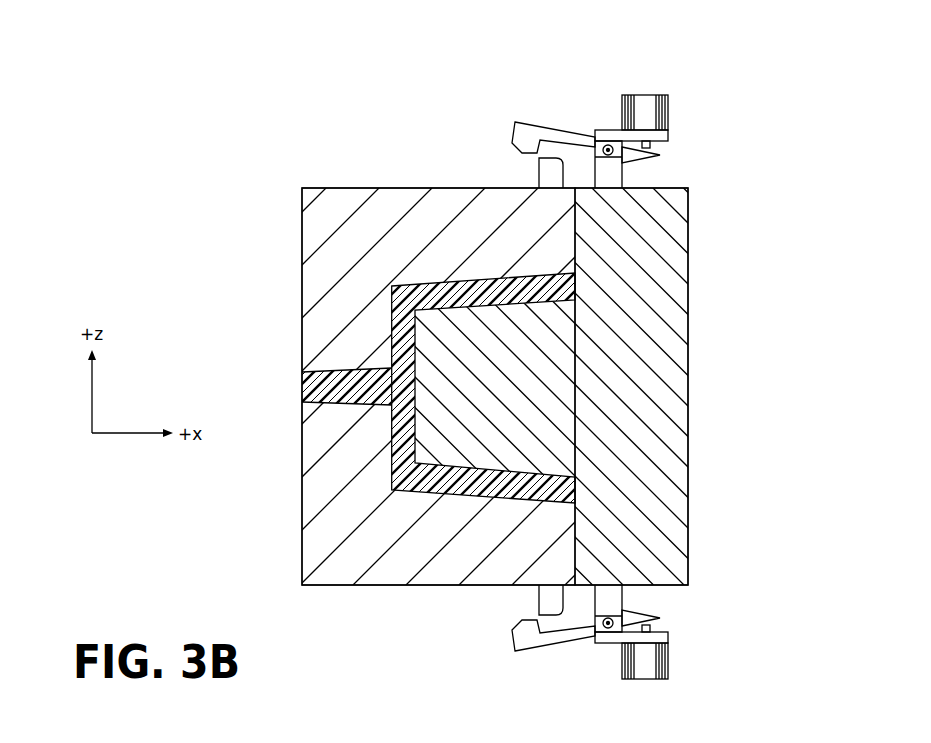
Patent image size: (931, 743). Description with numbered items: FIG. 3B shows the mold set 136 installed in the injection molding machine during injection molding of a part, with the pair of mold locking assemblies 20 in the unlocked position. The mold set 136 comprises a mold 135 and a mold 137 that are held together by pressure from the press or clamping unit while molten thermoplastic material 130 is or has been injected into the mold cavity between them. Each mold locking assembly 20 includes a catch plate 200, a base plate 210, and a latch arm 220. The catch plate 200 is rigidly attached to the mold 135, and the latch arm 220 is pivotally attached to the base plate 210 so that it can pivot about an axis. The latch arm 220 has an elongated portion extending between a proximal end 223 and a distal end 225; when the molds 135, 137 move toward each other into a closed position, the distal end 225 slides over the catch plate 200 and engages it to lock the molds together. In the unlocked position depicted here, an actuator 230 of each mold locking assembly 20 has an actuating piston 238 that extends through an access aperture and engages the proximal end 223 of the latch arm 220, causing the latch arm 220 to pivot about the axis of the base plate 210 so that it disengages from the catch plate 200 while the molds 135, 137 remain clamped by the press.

The mold locking assembly 20 is at (621, 357).
The molten thermoplastic material 130 is at (322, 391).
The mold 135 is at (368, 187).
The mold set 136 is at (226, 161).
The mold 137 is at (692, 391).
The catch plate 200 is at (547, 170).
The base plate 210 is at (612, 178).
The latch arm 220 is at (621, 377).
The proximal end 223 is at (633, 160).
The distal end 225 is at (516, 128).
The actuator 230 is at (680, 108).
The actuating piston 238 is at (653, 147).